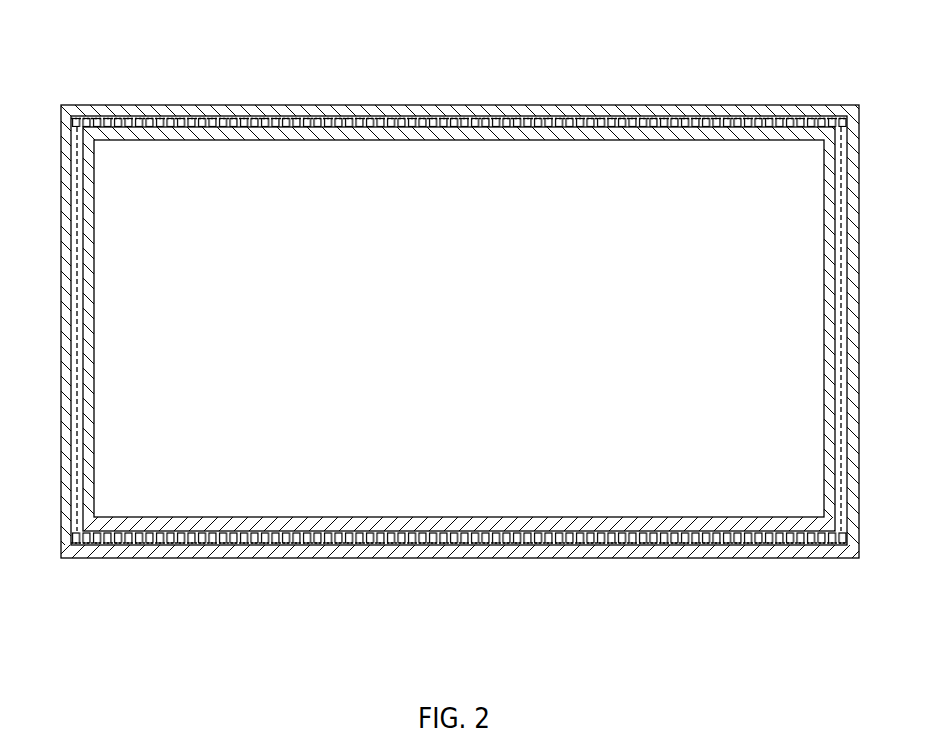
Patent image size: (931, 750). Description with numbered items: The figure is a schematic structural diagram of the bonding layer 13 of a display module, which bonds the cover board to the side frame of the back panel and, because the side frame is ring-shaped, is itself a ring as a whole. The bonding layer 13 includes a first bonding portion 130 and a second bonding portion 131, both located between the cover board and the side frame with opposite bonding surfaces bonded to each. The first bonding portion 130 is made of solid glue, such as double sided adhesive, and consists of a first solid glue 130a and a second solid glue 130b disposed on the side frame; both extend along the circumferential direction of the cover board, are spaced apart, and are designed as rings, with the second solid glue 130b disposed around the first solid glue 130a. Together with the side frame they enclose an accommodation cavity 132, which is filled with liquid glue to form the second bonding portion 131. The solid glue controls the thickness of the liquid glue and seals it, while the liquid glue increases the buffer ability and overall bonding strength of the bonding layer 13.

The bonding layer 13 is at (55, 88).
The first bonding portion 130 is at (355, 620).
The first solid glue 130a is at (374, 546).
The second solid glue 130b is at (238, 546).
The second bonding portion 131 is at (523, 544).
The accommodation cavity 132 is at (843, 165).